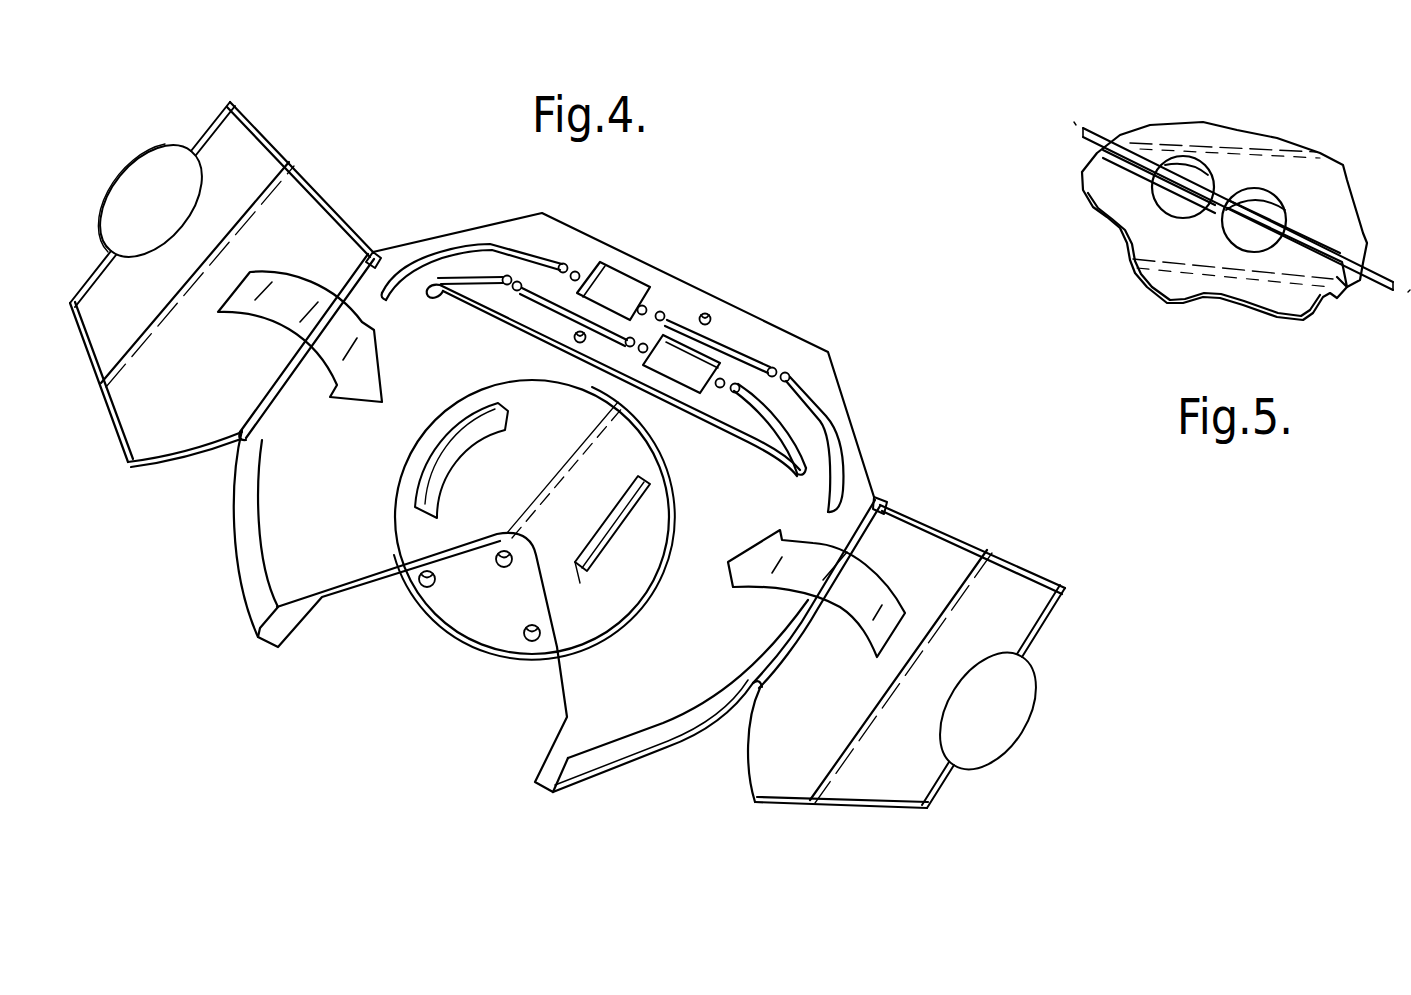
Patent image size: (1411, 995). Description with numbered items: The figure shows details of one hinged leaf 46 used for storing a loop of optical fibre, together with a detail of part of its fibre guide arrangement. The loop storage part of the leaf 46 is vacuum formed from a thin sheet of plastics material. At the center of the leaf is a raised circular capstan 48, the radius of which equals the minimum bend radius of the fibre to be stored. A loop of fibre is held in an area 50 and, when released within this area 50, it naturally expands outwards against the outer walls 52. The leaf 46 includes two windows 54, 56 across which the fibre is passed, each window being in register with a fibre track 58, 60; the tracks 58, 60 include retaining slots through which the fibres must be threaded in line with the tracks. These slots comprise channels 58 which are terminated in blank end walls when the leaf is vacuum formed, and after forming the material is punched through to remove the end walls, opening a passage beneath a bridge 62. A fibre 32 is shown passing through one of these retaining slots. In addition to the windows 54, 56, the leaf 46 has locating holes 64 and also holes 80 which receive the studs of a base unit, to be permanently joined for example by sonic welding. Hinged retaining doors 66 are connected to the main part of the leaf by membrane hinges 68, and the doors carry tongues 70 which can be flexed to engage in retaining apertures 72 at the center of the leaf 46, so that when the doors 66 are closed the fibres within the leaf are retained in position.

In FIG. 5, the fibre 32 is at (1370, 285).
In FIG. 4, the leaf 46 is at (245, 622).
In FIG. 4, the raised circular capstan 48 is at (410, 530).
In FIG. 4, the area 50 is at (641, 692).
In FIG. 4, the outer walls 52 is at (698, 420).
In FIG. 4, the window 54 is at (622, 288).
In FIG. 4, the window 56 is at (718, 354).
In FIG. 4, the fibre track 58 is at (456, 250).
In FIG. 5, the fibre track 58 is at (1150, 157).
In FIG. 4, the fibre track 60 is at (804, 431).
In FIG. 4, the bridge 62 is at (513, 278).
In FIG. 5, the bridge 62 is at (1223, 197).
In FIG. 4, the locating holes 64 is at (706, 316).
In FIG. 4, the hinged retaining doors 66 is at (253, 140).
In FIG. 4, the membrane hinges 68 is at (373, 252).
In FIG. 4, the tongues 70 is at (140, 183).
In FIG. 4, the retaining apertures 72 is at (468, 476).
In FIG. 4, the holes 80 is at (422, 587).